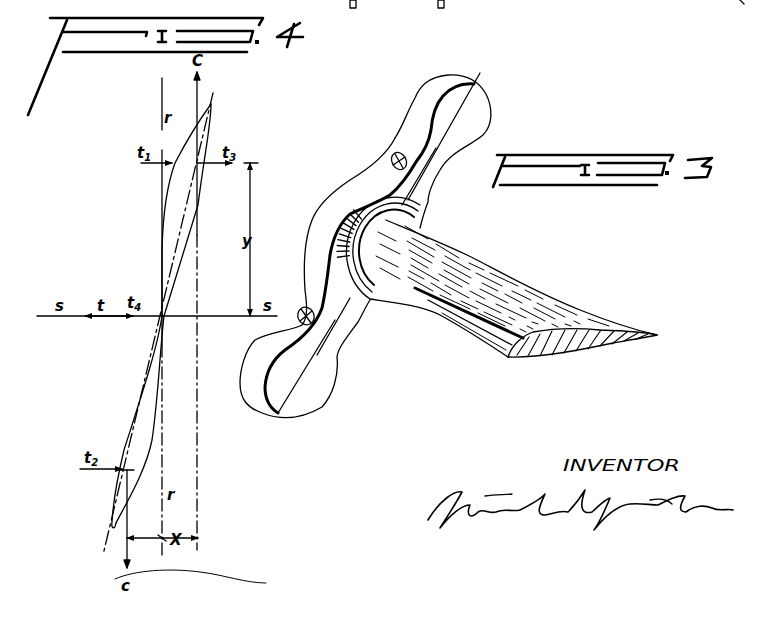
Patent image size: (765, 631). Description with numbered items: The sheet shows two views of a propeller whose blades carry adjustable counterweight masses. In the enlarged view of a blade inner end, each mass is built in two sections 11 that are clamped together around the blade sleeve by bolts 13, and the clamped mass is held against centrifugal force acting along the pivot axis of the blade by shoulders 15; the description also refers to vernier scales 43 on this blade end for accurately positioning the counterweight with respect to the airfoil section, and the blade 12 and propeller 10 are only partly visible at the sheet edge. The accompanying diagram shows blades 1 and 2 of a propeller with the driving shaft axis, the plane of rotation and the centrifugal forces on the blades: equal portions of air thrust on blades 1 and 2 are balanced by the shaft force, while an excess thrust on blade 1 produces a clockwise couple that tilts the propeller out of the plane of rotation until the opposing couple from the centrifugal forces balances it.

In FIG. 4, the blade 1 is at (209, 117).
In FIG. 4, the blade 2 is at (113, 518).
In FIG. 3, the propeller 10 is at (678, 5).
In FIG. 3, the sections 11 is at (457, 92).
In FIG. 3, the blade 12 is at (379, 5).
In FIG. 3, the bolts 13 is at (396, 158).
In FIG. 3, the shoulders 15 is at (412, 203).
In FIG. 3, the graduated scale 43 is at (366, 200).